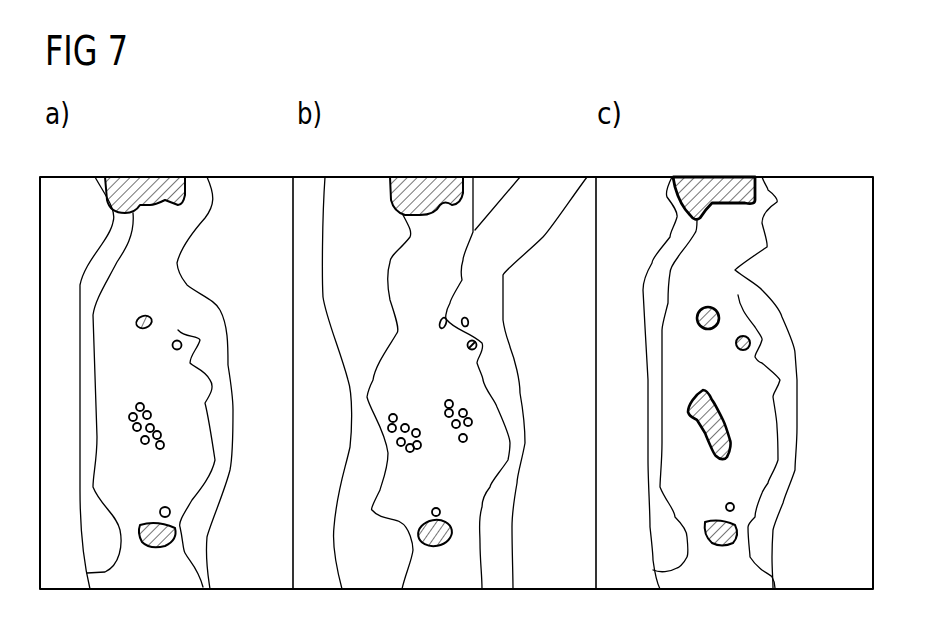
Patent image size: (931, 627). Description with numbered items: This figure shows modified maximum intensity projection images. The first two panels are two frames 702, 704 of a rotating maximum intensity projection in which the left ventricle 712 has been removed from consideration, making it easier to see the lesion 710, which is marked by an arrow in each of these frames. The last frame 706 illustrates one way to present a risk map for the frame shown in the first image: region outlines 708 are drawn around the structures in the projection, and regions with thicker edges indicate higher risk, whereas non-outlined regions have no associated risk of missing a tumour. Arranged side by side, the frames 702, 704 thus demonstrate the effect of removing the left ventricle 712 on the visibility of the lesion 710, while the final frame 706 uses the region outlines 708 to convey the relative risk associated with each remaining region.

The frame 702 is at (174, 160).
The frame 704 is at (444, 160).
The last frame 706 is at (732, 160).
The region outlines 708 is at (760, 189).
The lesion 710 is at (193, 340).
The left ventricle 712 is at (180, 335).